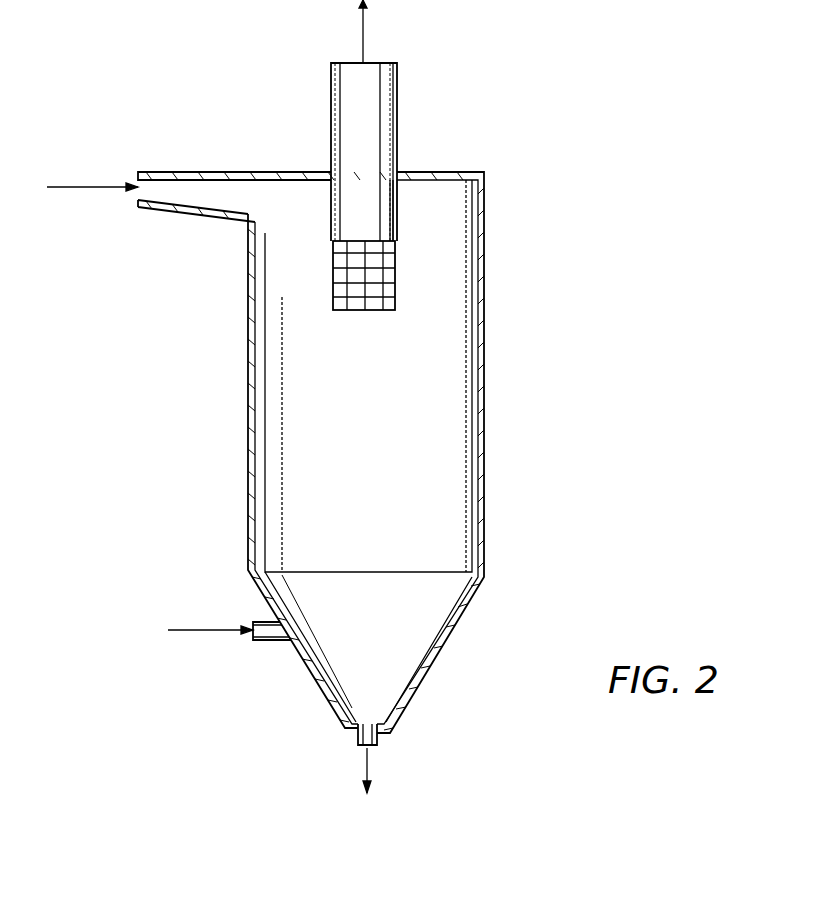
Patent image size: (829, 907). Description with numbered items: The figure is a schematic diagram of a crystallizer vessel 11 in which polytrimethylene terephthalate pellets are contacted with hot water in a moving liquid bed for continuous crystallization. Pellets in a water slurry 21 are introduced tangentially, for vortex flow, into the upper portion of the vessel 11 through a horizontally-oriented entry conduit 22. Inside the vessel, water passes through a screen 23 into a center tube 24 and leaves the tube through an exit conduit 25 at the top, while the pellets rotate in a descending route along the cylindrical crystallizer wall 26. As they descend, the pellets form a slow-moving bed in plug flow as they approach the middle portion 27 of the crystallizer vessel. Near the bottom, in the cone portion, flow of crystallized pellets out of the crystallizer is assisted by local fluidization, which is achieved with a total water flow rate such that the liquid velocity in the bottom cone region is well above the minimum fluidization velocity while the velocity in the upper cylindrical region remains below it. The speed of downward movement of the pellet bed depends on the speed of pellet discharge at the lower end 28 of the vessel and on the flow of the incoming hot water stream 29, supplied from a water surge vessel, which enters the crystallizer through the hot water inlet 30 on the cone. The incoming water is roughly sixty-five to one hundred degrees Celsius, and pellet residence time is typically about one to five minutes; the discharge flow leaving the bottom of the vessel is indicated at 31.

The vessel 11 is at (212, 383).
The water slurry 21 is at (70, 187).
The entry conduit 22 is at (172, 172).
The screen 23 is at (385, 278).
The center tube 24 is at (392, 210).
The exit conduit 25 is at (393, 111).
The cylindrical crystallizer wall 26 is at (483, 343).
The middle portion 27 is at (447, 457).
The lower end 28 is at (390, 740).
The hot water stream 29 is at (188, 628).
The hot water inlet 30 is at (268, 640).
The bottom outlet flow 31 is at (365, 762).